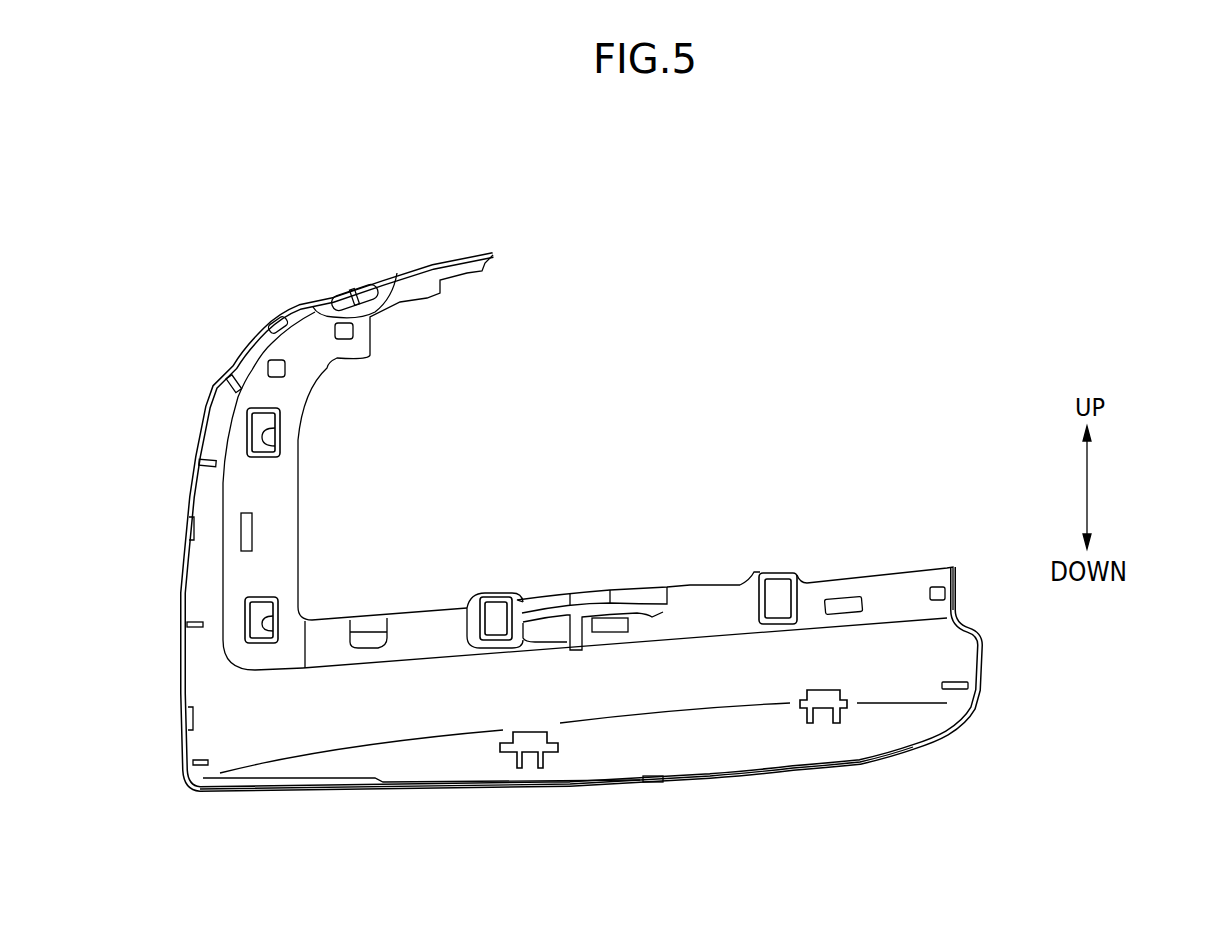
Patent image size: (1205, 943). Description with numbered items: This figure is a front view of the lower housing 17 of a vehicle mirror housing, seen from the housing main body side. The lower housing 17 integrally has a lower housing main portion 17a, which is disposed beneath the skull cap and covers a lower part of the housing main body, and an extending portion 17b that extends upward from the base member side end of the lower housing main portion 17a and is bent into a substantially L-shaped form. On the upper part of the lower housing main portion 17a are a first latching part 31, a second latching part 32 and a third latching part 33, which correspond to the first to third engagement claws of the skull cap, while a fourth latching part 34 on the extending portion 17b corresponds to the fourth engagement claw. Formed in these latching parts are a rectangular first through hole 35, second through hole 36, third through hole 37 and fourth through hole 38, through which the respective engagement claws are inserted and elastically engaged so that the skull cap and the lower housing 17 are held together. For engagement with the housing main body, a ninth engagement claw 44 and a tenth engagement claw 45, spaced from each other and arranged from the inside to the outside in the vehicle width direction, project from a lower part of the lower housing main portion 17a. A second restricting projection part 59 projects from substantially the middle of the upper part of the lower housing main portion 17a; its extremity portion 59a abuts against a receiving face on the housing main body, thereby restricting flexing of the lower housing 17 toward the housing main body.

The lower housing 17 is at (849, 764).
The lower housing main portion 17a is at (711, 757).
The extending portion 17b is at (308, 373).
The first latching part 31 is at (757, 603).
The second latching part 32 is at (471, 624).
The third latching part 33 is at (280, 633).
The fourth latching part 34 is at (261, 408).
The first through hole 35 is at (777, 585).
The second through hole 36 is at (492, 607).
The third through hole 37 is at (262, 607).
The fourth through hole 38 is at (267, 437).
The ninth engagement claw 44 is at (537, 740).
The tenth engagement claw 45 is at (828, 693).
The second restricting projection part 59 is at (640, 597).
The extremity portion 59a is at (590, 597).